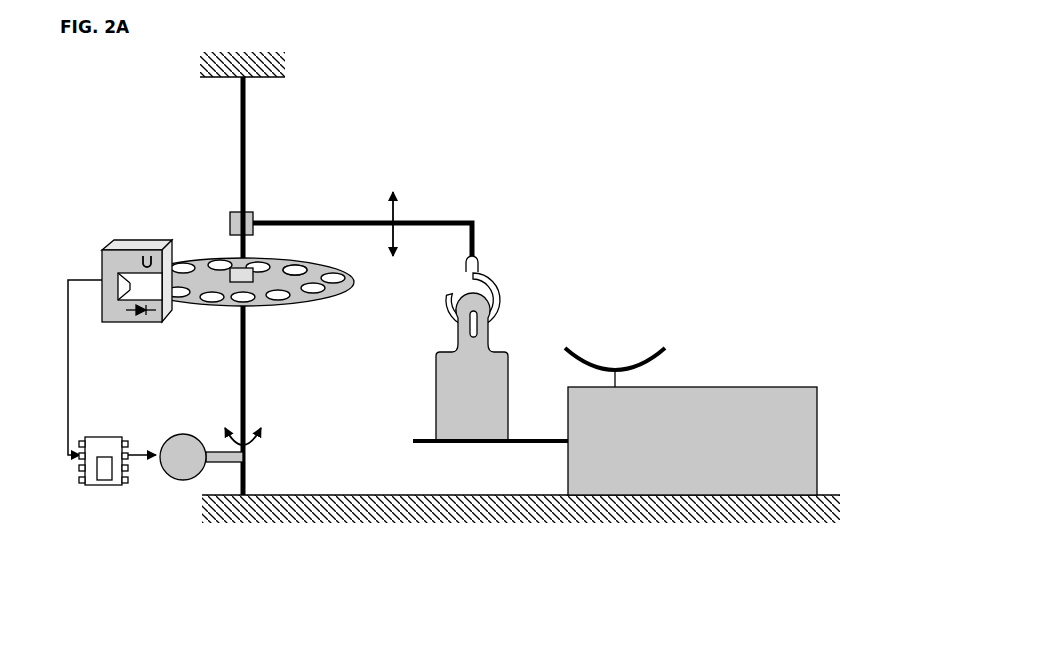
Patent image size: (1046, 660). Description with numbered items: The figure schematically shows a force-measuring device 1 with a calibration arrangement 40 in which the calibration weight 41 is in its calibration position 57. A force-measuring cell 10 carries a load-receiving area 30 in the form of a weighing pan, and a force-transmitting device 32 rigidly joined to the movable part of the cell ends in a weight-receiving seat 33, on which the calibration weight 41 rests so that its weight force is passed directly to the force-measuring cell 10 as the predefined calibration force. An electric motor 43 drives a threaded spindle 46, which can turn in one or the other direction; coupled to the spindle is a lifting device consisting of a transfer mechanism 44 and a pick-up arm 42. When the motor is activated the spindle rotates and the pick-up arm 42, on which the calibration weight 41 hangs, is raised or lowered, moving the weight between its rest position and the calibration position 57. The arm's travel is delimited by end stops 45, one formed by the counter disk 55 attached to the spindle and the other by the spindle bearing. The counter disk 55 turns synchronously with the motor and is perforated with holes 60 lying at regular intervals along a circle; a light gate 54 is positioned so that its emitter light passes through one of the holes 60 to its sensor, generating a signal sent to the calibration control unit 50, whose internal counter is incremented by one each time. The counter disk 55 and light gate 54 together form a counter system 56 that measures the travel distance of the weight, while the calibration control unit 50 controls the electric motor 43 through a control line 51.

The force-measuring device 1 is at (742, 184).
The force-measuring cell 10 is at (745, 440).
The load-receiving area 30 is at (665, 348).
The force-transmitting device 32 is at (540, 447).
The weight-receiving seat 33 is at (418, 445).
The calibration arrangement 40 is at (578, 185).
The calibration weight 41 is at (495, 348).
The pick-up arm 42 is at (425, 220).
The electric motor 43 is at (183, 487).
The transfer mechanism 44 is at (232, 262).
The end stop 45 is at (248, 79).
The threaded spindle 46 is at (240, 360).
The calibration control unit 50 is at (100, 485).
The control line 51 is at (132, 460).
The light gate 54 is at (135, 245).
The counter disk 55 is at (296, 290).
The counter system 56 is at (80, 256).
The calibration position 57 is at (508, 362).
The holes 60 is at (297, 260).